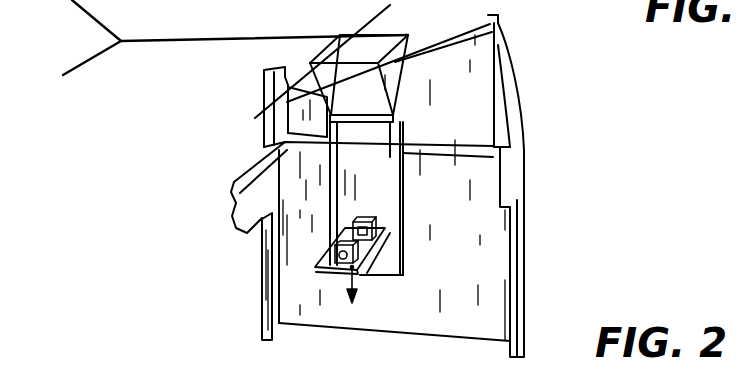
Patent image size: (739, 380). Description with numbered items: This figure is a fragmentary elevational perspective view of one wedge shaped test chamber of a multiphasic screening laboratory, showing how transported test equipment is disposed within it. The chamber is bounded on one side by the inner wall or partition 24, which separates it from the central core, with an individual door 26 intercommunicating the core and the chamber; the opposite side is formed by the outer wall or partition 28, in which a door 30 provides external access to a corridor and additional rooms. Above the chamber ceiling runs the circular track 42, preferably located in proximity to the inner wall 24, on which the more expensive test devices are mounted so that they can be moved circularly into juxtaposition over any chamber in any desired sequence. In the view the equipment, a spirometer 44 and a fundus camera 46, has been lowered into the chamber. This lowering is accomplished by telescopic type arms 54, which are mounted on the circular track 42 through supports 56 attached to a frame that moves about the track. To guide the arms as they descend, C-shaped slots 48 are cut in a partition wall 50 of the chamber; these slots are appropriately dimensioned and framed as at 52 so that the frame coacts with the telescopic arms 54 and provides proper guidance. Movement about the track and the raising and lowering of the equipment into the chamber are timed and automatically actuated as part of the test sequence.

The inner wall or partition 24 is at (262, 167).
The individual doors 26 is at (252, 235).
The outer wall or partition 28 is at (510, 170).
The doors 30 is at (510, 273).
The circular track 42 is at (382, 13).
The spirometer 44 is at (368, 212).
The fundus camera 46 is at (321, 269).
The C-shaped slots 48 is at (382, 203).
The partition wall 50 is at (478, 226).
The frame 52 is at (397, 257).
The telescopic type arms 54 is at (397, 127).
The supports 56 is at (409, 64).